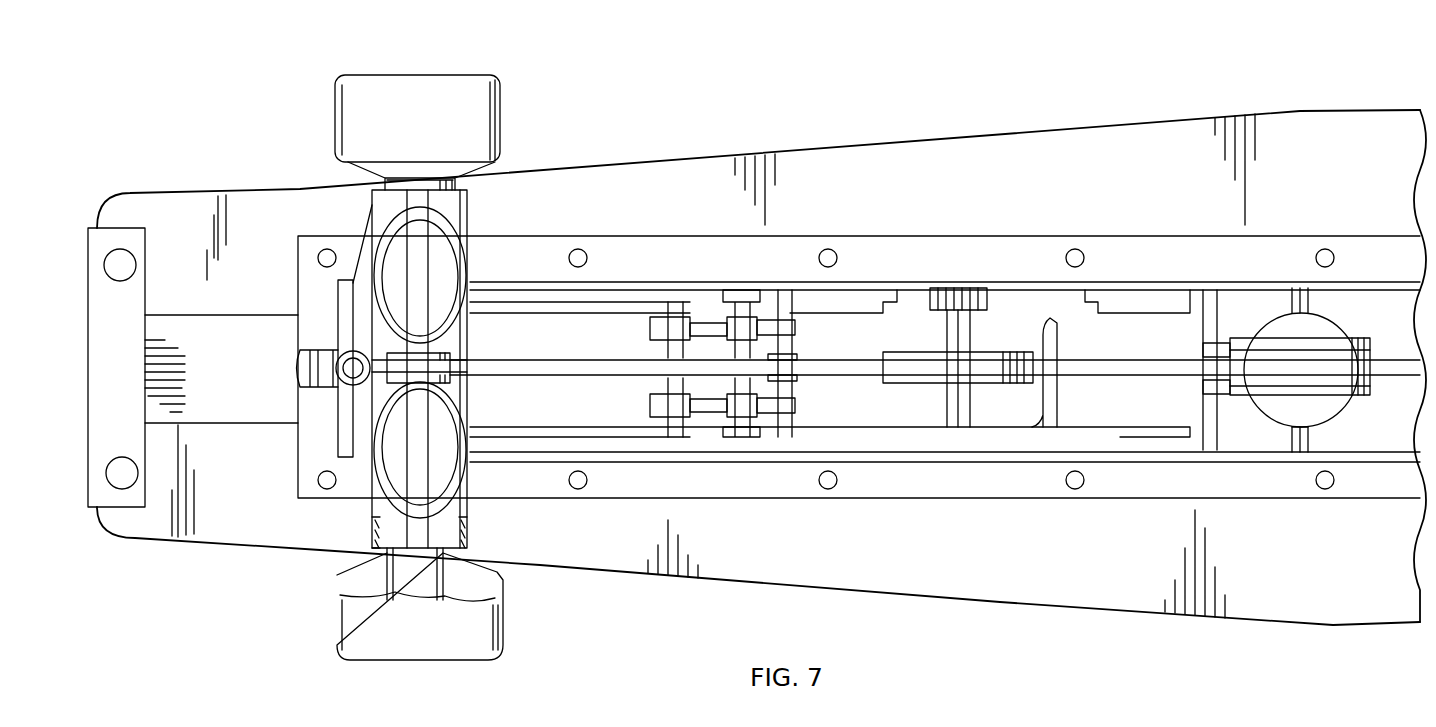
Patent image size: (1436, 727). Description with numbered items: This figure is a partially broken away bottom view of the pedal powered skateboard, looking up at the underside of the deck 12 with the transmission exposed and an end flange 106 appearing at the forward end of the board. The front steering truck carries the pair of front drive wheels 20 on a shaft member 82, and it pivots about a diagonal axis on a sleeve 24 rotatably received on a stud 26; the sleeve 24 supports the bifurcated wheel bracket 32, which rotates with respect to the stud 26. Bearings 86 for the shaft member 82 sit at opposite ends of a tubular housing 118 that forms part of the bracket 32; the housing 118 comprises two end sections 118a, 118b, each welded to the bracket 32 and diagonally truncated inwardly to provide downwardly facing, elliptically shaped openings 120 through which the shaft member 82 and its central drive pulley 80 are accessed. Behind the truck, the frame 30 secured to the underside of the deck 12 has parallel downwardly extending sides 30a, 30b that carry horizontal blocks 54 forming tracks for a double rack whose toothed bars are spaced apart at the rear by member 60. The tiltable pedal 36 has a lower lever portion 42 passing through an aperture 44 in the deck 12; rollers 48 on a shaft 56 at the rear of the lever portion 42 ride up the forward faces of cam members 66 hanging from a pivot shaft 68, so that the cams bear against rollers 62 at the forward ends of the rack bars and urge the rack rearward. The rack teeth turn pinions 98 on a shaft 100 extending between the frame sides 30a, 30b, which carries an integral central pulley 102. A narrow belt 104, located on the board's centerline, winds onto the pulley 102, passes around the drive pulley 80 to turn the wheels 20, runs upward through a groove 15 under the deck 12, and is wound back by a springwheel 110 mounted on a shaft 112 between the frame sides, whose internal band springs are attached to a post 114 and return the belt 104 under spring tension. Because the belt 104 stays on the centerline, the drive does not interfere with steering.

The deck 12 is at (722, 152).
The groove 15 is at (1395, 358).
The front drive wheels 20 is at (408, 95).
The sleeve 24 is at (330, 365).
The stud 26 is at (350, 355).
The frame 30 is at (950, 503).
The frame side 30a is at (1133, 297).
The frame side 30b is at (1160, 460).
The wheel bracket 32 is at (335, 432).
The tiltable pedal 36 is at (580, 415).
The lower lever portion 42 is at (632, 423).
The aperture 44 is at (224, 316).
The rollers 48 is at (666, 310).
The blocks 54 is at (840, 300).
The shaft 56 is at (663, 348).
The spacing member 60 is at (1060, 393).
The rollers 62 is at (770, 312).
The cam members 66 is at (708, 318).
The pivot shaft 68 is at (800, 392).
The drive pulley 80 is at (445, 358).
The shaft member 82 is at (432, 266).
The shaft bearing 86 is at (418, 540).
The pinions 98 is at (958, 285).
The shaft 100 is at (948, 338).
The drive pulley 102 is at (935, 385).
The belt 104 is at (548, 382).
The end flange 106 is at (88, 477).
The springwheel 110 is at (1337, 417).
The shaft 112 is at (1283, 435).
The post 114 is at (1220, 315).
The tubular housing 118 is at (365, 199).
The end section 118a is at (470, 200).
The end section 118b is at (365, 468).
The elliptically shaped openings 120 is at (453, 447).